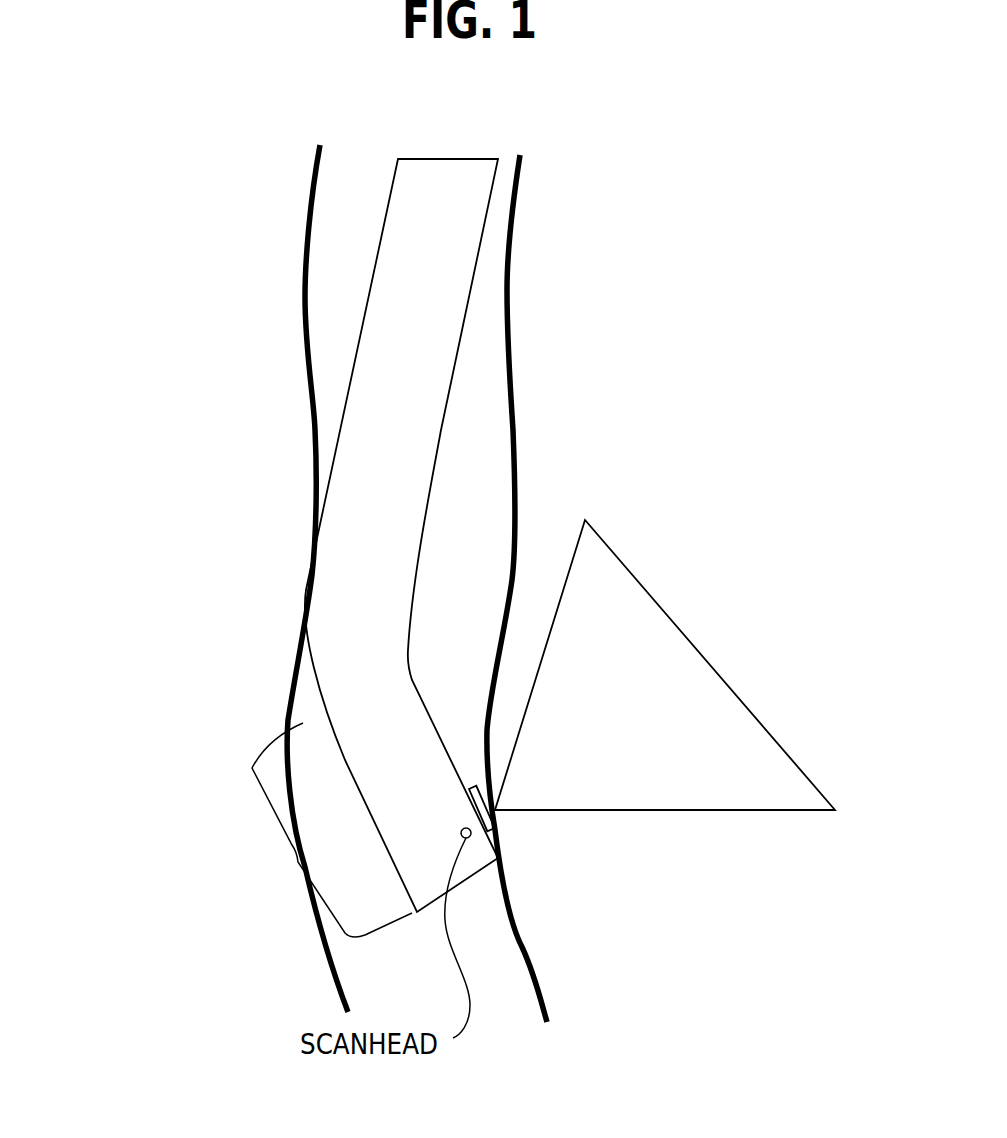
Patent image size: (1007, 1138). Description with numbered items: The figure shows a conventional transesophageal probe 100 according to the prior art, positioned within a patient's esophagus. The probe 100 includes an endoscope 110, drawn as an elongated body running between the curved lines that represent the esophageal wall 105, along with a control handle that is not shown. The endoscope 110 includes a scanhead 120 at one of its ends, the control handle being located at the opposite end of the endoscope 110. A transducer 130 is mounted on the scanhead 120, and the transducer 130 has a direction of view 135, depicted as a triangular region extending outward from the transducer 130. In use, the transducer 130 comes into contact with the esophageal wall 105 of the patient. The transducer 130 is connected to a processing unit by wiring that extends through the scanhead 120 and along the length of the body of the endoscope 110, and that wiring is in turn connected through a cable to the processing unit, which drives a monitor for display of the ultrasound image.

The conventional transesophageal probe 100 is at (140, 105).
The esophageal wall 105 is at (516, 399).
The endoscope 110 is at (408, 268).
The scanhead 120 is at (298, 862).
The transducer 130 is at (500, 816).
The direction of view 135 is at (646, 649).